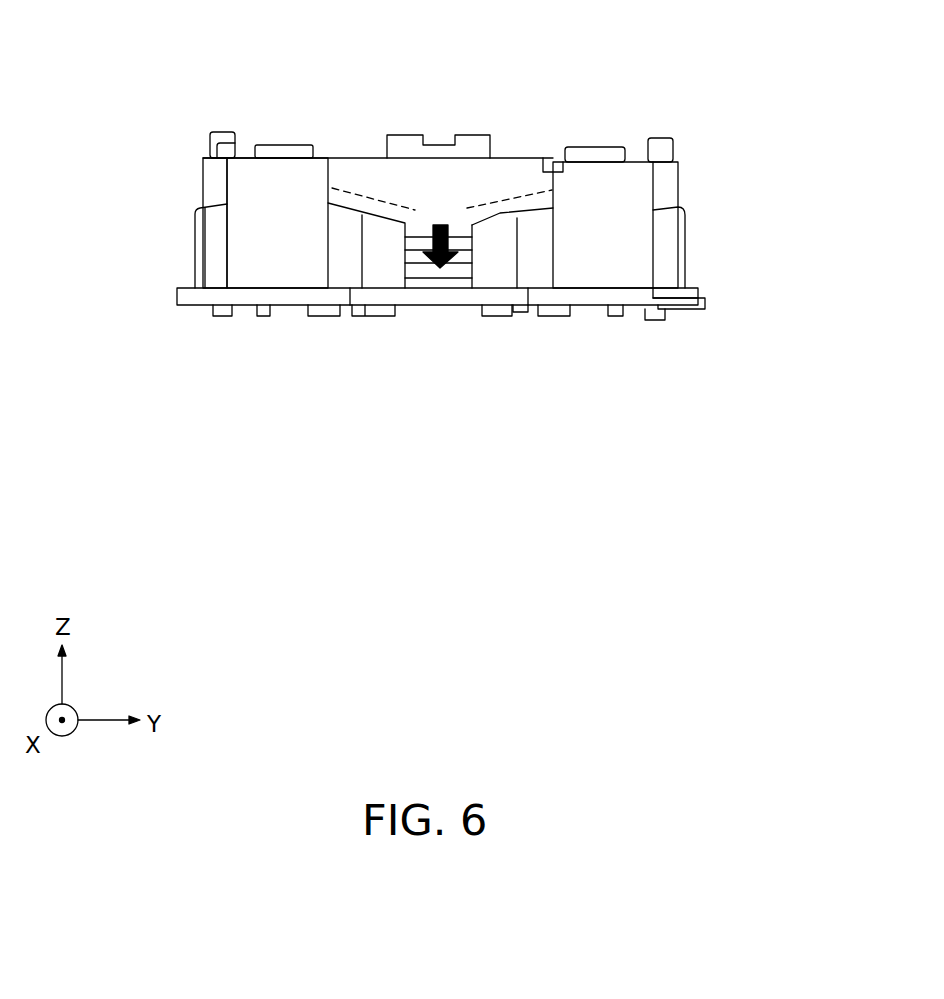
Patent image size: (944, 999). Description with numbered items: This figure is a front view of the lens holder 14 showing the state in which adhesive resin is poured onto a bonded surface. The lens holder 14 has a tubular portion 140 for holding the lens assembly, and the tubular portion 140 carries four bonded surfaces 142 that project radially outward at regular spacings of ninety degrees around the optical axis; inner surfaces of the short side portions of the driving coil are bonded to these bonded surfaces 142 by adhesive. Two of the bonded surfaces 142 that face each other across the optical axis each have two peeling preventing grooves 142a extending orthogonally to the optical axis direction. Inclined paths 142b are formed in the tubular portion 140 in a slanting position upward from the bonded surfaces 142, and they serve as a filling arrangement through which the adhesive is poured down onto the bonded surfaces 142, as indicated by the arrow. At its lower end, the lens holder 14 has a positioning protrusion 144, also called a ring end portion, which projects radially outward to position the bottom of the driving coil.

The lens holder 14 is at (450, 219).
The tubular portion 140 is at (250, 168).
The bonded surface 142 is at (197, 240).
The peeling preventing groove 142a is at (418, 285).
The inclined path 142b is at (217, 207).
The positioning protrusion 144 is at (177, 297).